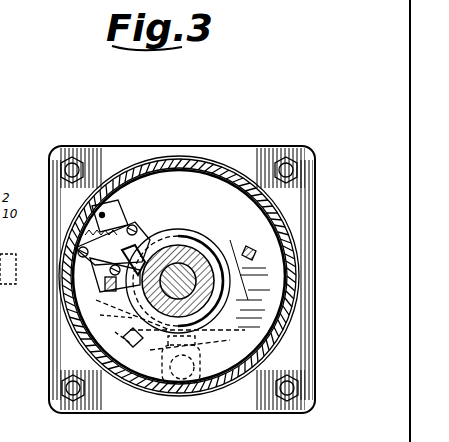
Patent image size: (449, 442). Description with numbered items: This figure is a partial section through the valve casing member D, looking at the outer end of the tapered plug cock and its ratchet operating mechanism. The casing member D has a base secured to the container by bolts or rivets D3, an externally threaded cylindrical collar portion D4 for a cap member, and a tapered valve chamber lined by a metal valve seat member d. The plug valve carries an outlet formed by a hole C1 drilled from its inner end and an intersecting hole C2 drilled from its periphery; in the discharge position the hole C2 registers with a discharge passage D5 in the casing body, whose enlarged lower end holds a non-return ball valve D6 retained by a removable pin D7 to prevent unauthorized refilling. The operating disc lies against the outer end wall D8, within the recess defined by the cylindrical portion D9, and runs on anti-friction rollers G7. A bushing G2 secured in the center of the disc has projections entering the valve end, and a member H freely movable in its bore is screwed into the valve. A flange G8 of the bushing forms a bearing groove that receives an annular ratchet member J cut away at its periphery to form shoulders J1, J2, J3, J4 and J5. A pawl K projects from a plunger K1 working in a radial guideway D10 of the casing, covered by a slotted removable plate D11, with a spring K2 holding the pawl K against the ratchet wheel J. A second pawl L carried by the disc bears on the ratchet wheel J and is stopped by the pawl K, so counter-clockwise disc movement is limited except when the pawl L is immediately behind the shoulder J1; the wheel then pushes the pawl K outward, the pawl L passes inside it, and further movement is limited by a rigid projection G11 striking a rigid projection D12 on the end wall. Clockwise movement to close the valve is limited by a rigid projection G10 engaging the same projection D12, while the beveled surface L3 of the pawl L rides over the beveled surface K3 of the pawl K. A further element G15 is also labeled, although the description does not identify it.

The radial guideway D10 is at (96, 188).
The cylindrical portion D9 is at (146, 167).
The valve casing member D is at (181, 152).
The outer end wall D8 is at (207, 162).
The flange portion G8 is at (224, 182).
The cylindrical collar portion D4 is at (230, 170).
The bolts or rivets D3 is at (288, 158).
The plunger K1 is at (108, 211).
The pawl K is at (118, 228).
The pawl L is at (186, 228).
The beveled surface L3 is at (196, 232).
The shoulder J4 is at (150, 240).
The valve seat member d is at (210, 232).
The shoulder J3 is at (226, 240).
The rigid projection G10 is at (249, 246).
The shoulder J2 is at (226, 282).
The member H is at (212, 284).
The annular member J is at (232, 298).
The bushing G2 is at (218, 312).
The discharge passage D5 is at (202, 346).
The spring K2 is at (92, 231).
The removable plate D11 is at (108, 282).
The beveled surface K3 is at (115, 268).
The rigid projection G11 is at (84, 290).
The lead G15 is at (50, 320).
The anti-friction rollers G7 is at (50, 335).
The shoulder J5 is at (124, 296).
The hole C1 is at (140, 320).
The hole C2 is at (123, 338).
The shoulder J1 is at (160, 340).
The rigid projection D12 is at (130, 346).
The removable pin D7 is at (160, 385).
The non-return valve D6 is at (206, 392).